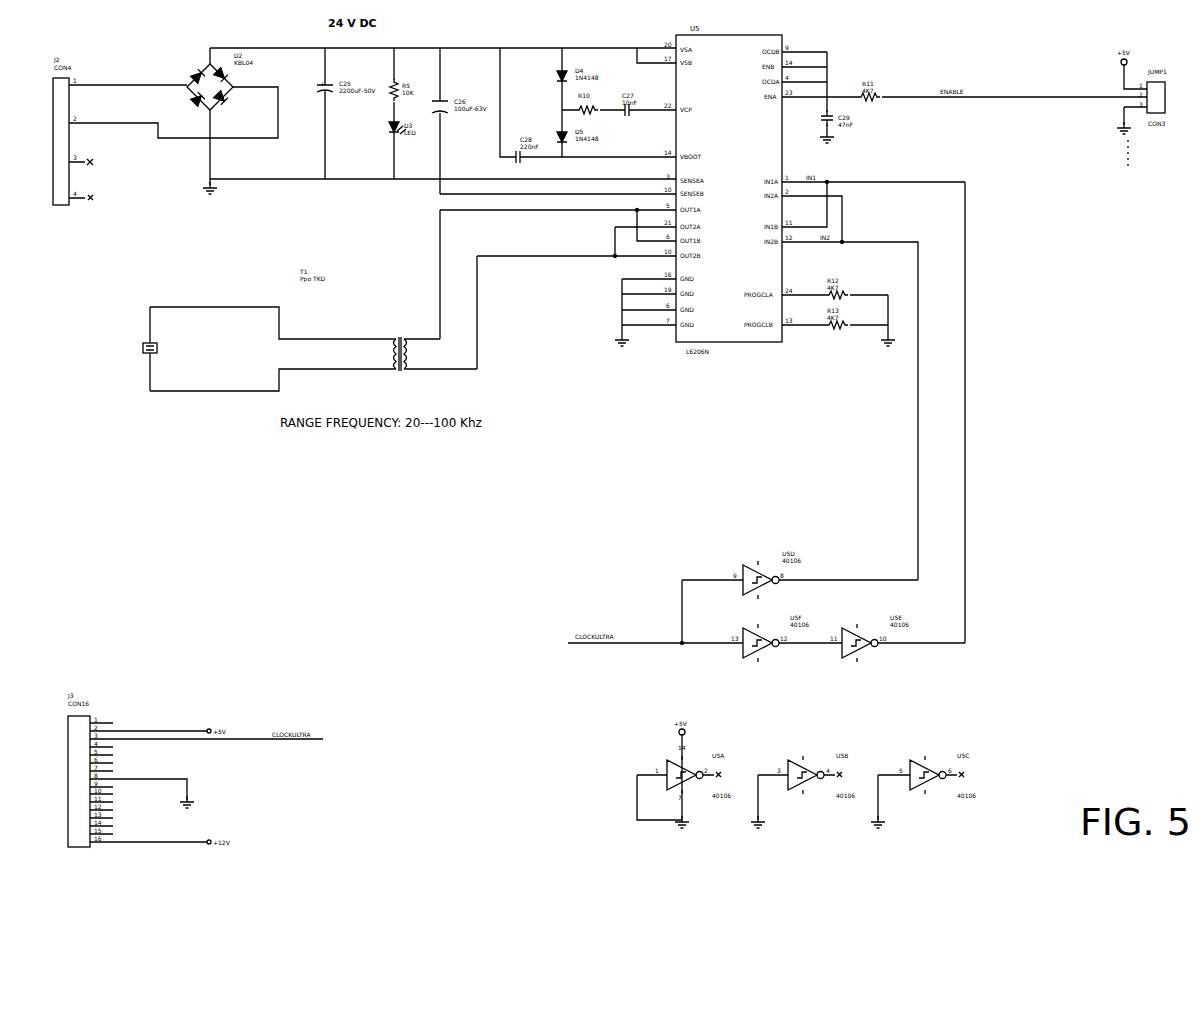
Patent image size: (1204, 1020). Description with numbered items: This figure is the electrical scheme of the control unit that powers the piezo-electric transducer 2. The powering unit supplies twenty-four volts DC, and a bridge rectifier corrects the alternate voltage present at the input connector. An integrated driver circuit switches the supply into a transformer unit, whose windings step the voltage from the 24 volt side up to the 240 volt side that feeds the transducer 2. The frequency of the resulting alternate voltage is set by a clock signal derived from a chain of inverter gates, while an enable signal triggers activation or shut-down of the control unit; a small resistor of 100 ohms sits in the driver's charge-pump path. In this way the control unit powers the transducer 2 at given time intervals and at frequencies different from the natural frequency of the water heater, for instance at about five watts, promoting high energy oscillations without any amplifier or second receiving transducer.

The piezo-electric transducer 2 is at (142, 362).
The transformer primary winding (240 V) 240 is at (368, 354).
The transformer secondary winding (24 V) 24 is at (424, 354).
The resistor R10 (100 ohm) 100 is at (587, 106).